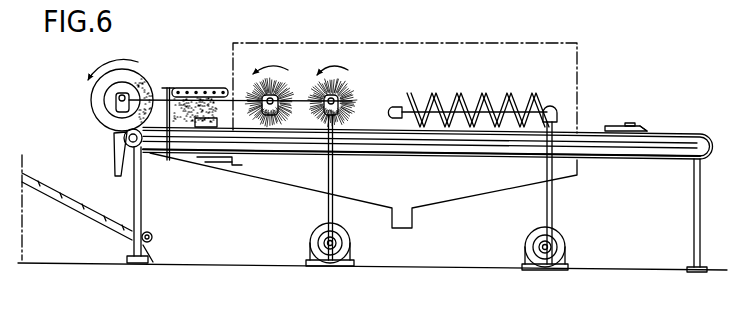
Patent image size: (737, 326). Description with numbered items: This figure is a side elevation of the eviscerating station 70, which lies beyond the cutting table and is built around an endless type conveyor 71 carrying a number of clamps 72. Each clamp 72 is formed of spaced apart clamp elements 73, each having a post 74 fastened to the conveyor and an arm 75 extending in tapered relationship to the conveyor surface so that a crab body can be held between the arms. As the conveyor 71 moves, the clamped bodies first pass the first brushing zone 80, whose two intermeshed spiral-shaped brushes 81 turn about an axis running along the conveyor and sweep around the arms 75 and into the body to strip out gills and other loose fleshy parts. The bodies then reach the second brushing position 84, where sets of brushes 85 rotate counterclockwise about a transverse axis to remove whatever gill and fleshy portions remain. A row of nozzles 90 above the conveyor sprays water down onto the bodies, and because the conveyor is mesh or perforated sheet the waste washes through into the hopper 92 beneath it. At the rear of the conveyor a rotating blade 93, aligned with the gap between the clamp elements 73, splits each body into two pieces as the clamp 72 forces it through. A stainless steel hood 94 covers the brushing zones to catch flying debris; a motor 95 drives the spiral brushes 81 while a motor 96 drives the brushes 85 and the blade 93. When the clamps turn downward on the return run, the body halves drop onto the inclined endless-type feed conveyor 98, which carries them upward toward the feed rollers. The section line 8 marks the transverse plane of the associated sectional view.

The section line 8- 8 is at (395, 27).
The eviscerating station 70 is at (617, 85).
The endless type conveyor 71 is at (585, 133).
The clamp 72 is at (112, 157).
The clamp element 73 is at (645, 129).
The post 74 is at (650, 132).
The arm 75 is at (607, 127).
The first brushing zone 80 is at (468, 71).
The spiral-shaped brush 81 is at (523, 102).
The second brushing position 84 is at (300, 72).
The brush 85 is at (250, 94).
The nozzle 90 is at (198, 87).
The hopper 92 is at (273, 193).
The rotating blade 93 is at (146, 79).
The stainless steel hood 94 is at (458, 45).
The motor 95 is at (565, 247).
The motor 96 is at (311, 243).
The endless-type feed conveyor 98 is at (73, 197).